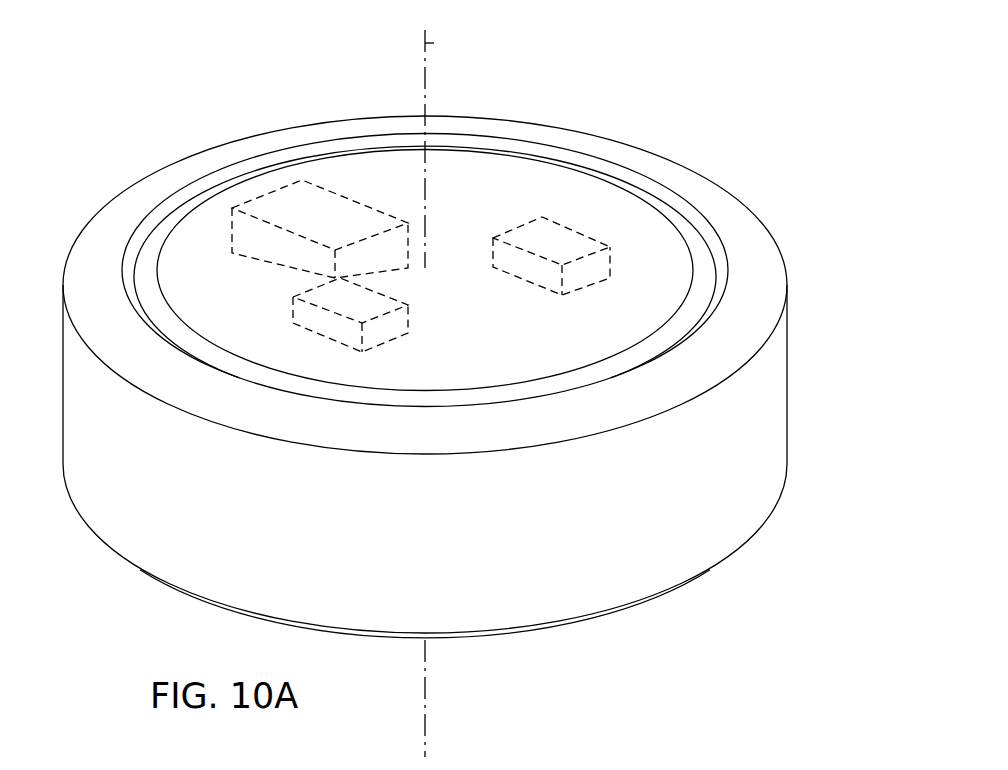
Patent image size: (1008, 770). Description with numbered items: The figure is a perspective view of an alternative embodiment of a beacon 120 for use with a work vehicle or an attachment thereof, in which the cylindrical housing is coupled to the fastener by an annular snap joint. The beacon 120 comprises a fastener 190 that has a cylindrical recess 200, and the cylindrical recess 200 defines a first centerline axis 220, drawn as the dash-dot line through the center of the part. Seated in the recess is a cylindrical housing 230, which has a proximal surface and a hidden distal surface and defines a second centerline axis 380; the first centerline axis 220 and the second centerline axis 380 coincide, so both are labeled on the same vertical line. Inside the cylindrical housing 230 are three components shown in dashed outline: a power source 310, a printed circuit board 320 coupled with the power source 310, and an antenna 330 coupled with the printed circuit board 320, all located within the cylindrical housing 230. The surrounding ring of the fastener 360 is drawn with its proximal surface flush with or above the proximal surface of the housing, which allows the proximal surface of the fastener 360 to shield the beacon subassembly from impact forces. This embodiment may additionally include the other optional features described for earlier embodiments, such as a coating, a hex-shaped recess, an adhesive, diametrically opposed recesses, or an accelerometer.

The beacon 120 is at (177, 55).
The fastener 190 is at (767, 392).
The cylindrical recess 200 is at (162, 226).
The first centerline axis 220 is at (438, 52).
The cylindrical housing 230 is at (516, 192).
The power source 310 is at (261, 269).
The printed circuit board 320 is at (413, 331).
The antenna 330 is at (553, 298).
The fastener 360 is at (706, 202).
The second centerline axis 380 is at (418, 57).